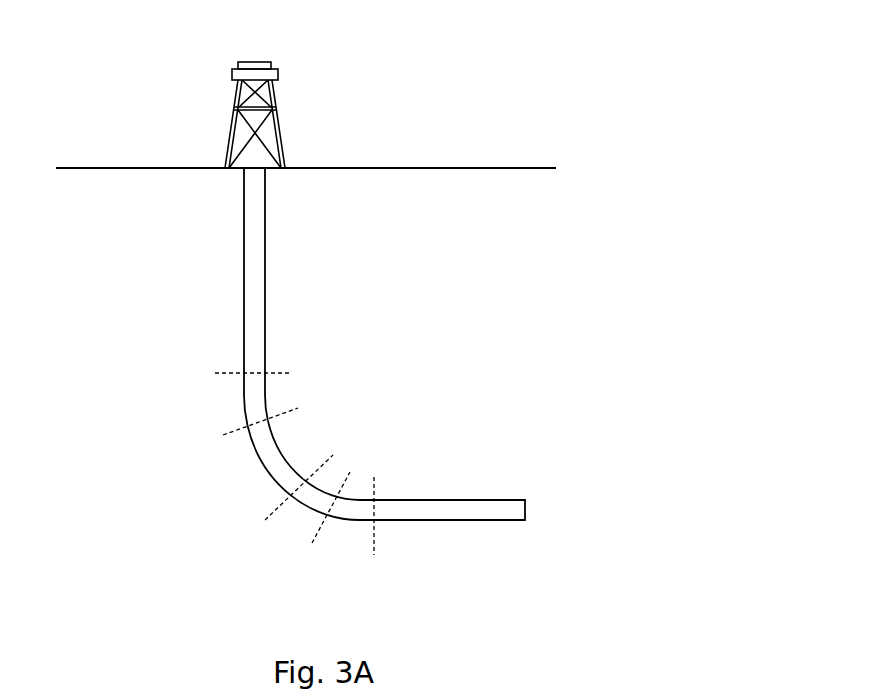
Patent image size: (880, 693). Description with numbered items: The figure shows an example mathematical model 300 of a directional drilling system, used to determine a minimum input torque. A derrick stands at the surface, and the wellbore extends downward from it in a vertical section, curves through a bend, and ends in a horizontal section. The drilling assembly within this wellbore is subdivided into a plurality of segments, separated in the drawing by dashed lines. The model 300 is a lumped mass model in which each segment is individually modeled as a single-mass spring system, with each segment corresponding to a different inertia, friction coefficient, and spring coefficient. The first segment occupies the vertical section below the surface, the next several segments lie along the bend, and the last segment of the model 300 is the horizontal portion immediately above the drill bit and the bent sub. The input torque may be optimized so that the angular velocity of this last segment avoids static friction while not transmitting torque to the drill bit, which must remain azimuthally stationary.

The directional drilling system model 300 is at (513, 147).